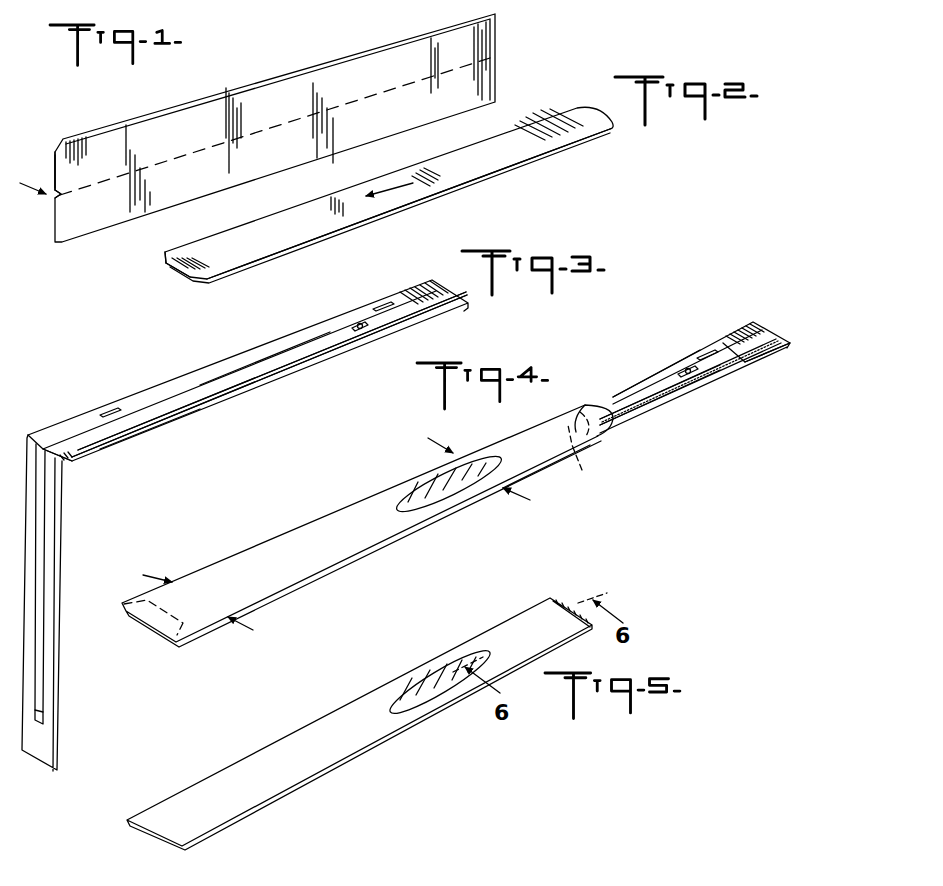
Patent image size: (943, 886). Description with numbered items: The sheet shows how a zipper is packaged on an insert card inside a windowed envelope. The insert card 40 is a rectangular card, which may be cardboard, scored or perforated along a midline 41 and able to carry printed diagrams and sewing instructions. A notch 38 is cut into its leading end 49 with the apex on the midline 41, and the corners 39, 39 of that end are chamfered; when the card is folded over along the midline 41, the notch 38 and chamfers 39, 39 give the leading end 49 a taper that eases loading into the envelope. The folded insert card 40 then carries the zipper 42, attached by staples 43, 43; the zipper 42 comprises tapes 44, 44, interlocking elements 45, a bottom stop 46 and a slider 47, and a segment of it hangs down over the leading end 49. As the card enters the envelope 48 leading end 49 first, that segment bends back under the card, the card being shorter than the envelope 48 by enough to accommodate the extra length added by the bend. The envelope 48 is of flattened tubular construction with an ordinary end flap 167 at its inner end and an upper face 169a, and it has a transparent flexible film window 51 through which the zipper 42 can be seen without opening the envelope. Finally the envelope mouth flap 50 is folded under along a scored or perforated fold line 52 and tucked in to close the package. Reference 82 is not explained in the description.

In FIG. 1, the notch 38 is at (50, 199).
In FIG. 1, the chamfered corners 39 is at (56, 148).
In FIG. 2, the chamfered corners 39 is at (165, 253).
In FIG. 3, the chamfered corners 39 is at (67, 462).
In FIG. 1, the insert card 40 is at (248, 86).
In FIG. 2, the insert card 40 is at (530, 123).
In FIG. 3, the insert card 40 is at (216, 349).
In FIG. 4, the insert card 40 is at (740, 323).
In FIG. 1, the midline 41 is at (182, 147).
In FIG. 2, the midline 41 is at (477, 179).
In FIG. 3, the midline 41 is at (161, 432).
In FIG. 4, the midline 41 is at (773, 353).
In FIG. 3, the zipper 42 is at (65, 535).
In FIG. 4, the zipper 42 is at (630, 382).
In FIG. 3, the staples 43 is at (112, 406).
In FIG. 4, the staples 43 is at (707, 350).
In FIG. 3, the tapes 44 is at (274, 349).
In FIG. 4, the tapes 44 is at (654, 402).
In FIG. 3, the interlocking elements 45 is at (262, 367).
In FIG. 3, the bottom stop 46 is at (42, 717).
In FIG. 3, the slider 47 is at (362, 328).
In FIG. 4, the slider 47 is at (684, 378).
In FIG. 4, the envelope 48 is at (284, 517).
In FIG. 5, the envelope 48 is at (295, 728).
In FIG. 1, the leading end 49 is at (45, 178).
In FIG. 2, the leading end 49 is at (180, 270).
In FIG. 4, the envelope mouth flap 50 is at (588, 406).
In FIG. 4, the window 51 is at (468, 458).
In FIG. 5, the window 51 is at (432, 678).
In FIG. 4, the fold line 52 is at (587, 459).
In FIG. 3, the hatched end portion 82 is at (408, 287).
In FIG. 4, the hatched end portion 82 is at (767, 325).
In FIG. 4, the end flap 167 is at (163, 612).
In FIG. 4, the upper face 169a is at (548, 438).